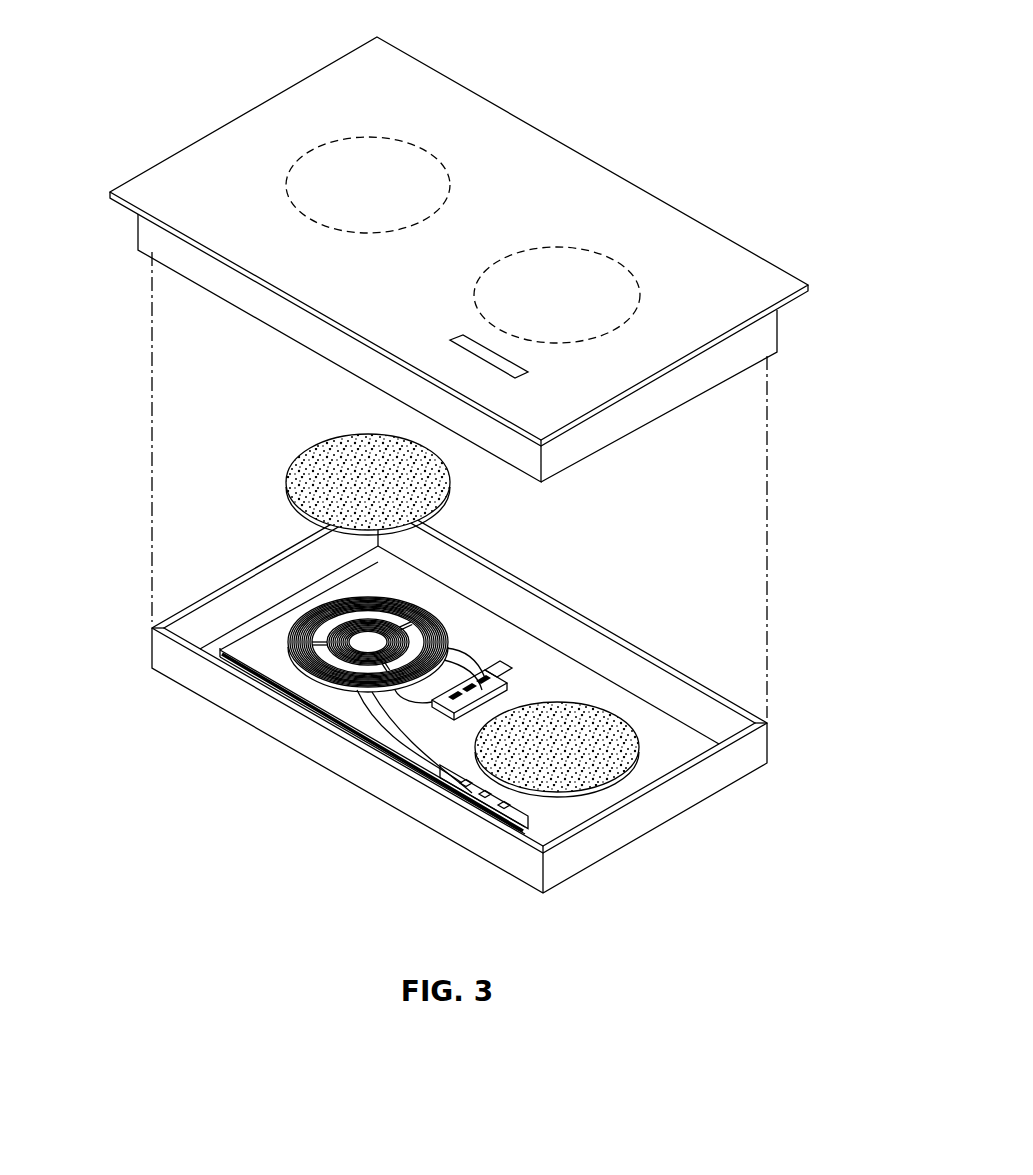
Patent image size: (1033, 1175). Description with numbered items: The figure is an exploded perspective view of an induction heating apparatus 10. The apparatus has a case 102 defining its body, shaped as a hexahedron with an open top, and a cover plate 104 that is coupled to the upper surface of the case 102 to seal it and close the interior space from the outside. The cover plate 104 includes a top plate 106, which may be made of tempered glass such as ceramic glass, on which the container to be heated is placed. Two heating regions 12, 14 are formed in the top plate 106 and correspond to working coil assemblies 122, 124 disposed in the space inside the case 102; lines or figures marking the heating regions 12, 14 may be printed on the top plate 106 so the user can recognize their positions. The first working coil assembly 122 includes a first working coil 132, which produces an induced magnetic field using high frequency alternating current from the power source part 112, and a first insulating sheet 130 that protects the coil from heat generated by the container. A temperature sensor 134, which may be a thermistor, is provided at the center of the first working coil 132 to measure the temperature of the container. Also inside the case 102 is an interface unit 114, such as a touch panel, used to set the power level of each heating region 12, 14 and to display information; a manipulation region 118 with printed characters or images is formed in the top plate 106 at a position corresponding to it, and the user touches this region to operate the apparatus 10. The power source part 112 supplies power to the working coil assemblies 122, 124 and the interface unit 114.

The induction heating apparatus 10 is at (557, 113).
The first heating region 12 is at (403, 140).
The second heating region 14 is at (592, 250).
The case 102 is at (385, 783).
The cover plate 104 is at (135, 234).
The top plate 106 is at (717, 347).
The power source part 112 is at (512, 670).
The interface unit 114 is at (493, 810).
The manipulation region 118 is at (518, 378).
The first working coil assembly 122 is at (295, 680).
The second working coil assembly 124 is at (570, 812).
The first insulating sheet 130 is at (303, 467).
The first working coil 132 is at (295, 628).
The temperature sensor 134 is at (410, 607).